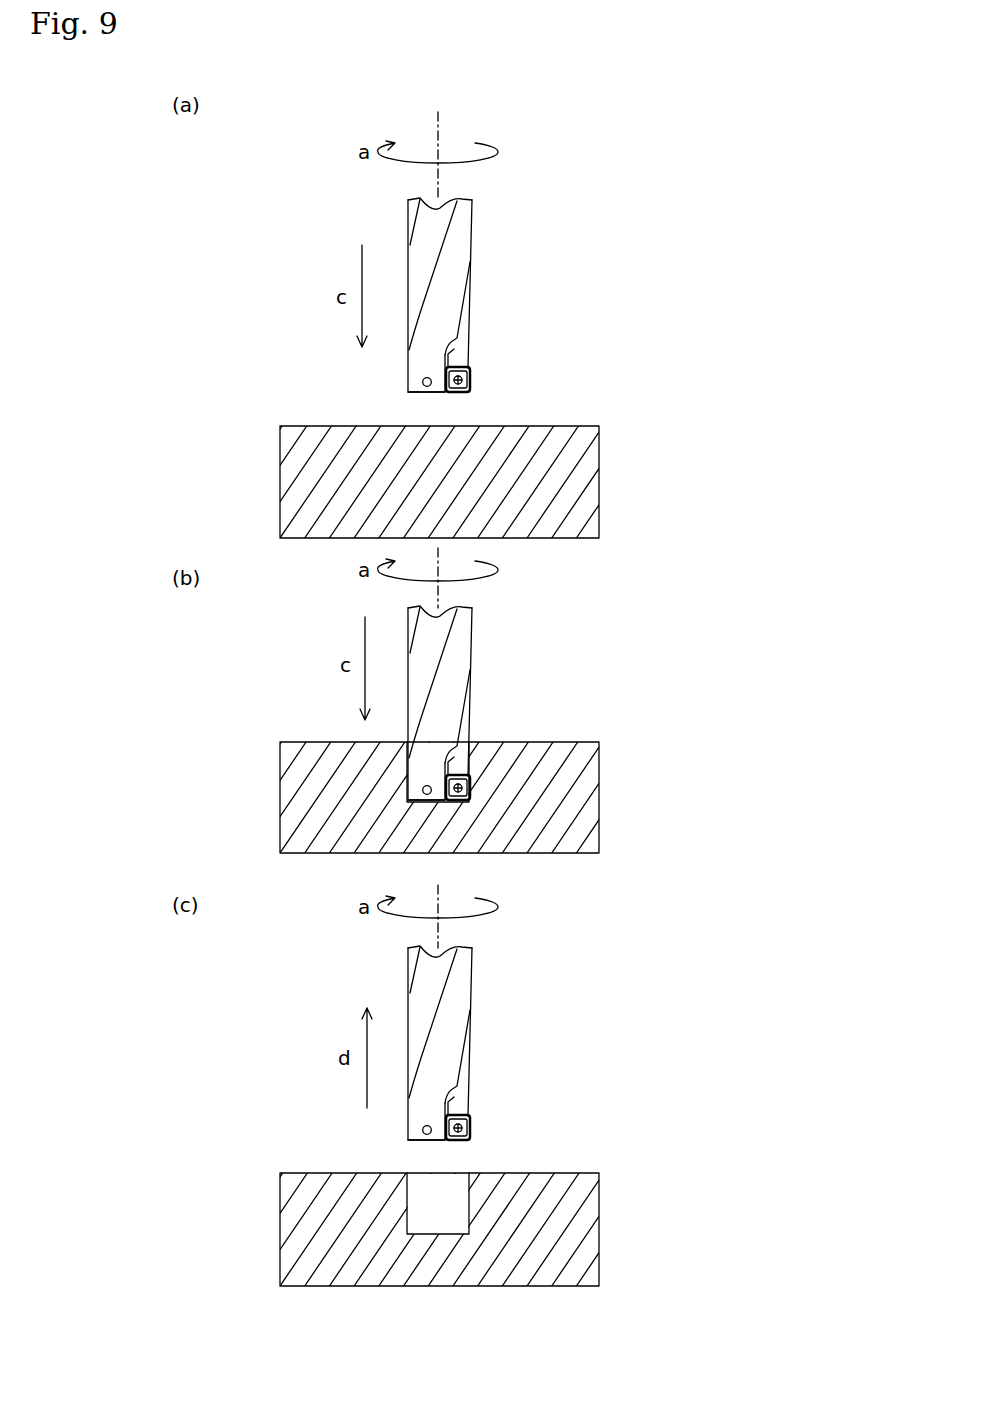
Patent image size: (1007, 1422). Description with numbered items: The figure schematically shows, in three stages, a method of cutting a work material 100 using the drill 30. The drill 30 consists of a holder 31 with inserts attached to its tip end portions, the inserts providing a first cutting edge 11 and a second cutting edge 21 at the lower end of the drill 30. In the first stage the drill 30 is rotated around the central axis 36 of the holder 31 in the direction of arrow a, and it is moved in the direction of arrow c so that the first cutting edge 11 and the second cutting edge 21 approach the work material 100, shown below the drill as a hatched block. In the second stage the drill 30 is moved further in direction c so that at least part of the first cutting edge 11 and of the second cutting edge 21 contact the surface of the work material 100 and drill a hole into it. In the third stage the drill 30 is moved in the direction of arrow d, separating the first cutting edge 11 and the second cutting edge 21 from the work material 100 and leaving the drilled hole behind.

The first cutting edge 11 is at (428, 393).
The second cutting edge 21 is at (467, 393).
The drill 30 is at (457, 661).
The holder 31 is at (452, 290).
The central axis 36 is at (440, 121).
The work material 100 is at (568, 484).